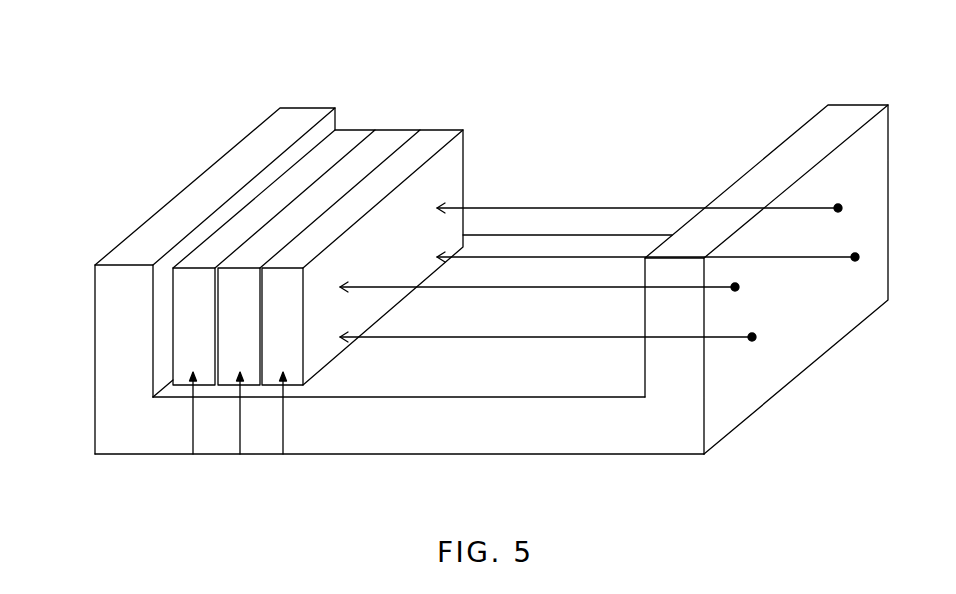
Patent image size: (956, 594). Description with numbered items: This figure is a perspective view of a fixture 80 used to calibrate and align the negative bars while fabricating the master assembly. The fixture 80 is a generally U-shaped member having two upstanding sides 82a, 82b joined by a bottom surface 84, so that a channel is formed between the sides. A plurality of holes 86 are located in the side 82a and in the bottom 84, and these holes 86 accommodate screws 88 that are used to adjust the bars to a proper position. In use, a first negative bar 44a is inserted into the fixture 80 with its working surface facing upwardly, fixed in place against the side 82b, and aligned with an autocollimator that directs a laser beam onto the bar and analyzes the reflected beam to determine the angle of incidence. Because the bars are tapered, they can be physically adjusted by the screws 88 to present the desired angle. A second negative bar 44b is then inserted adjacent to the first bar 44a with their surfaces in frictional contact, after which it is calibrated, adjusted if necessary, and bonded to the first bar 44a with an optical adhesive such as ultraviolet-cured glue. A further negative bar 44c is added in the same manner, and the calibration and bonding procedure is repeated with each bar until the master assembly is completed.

The fixture 80 is at (456, 304).
The side 82a is at (758, 380).
The side 82b is at (95, 348).
The bottom surface 84 is at (587, 442).
The first negative bar 44a is at (350, 137).
The second negative bar 44b is at (388, 137).
The negative bar 44c is at (435, 137).
The holes 86 is at (836, 212).
The screws 88 is at (610, 337).